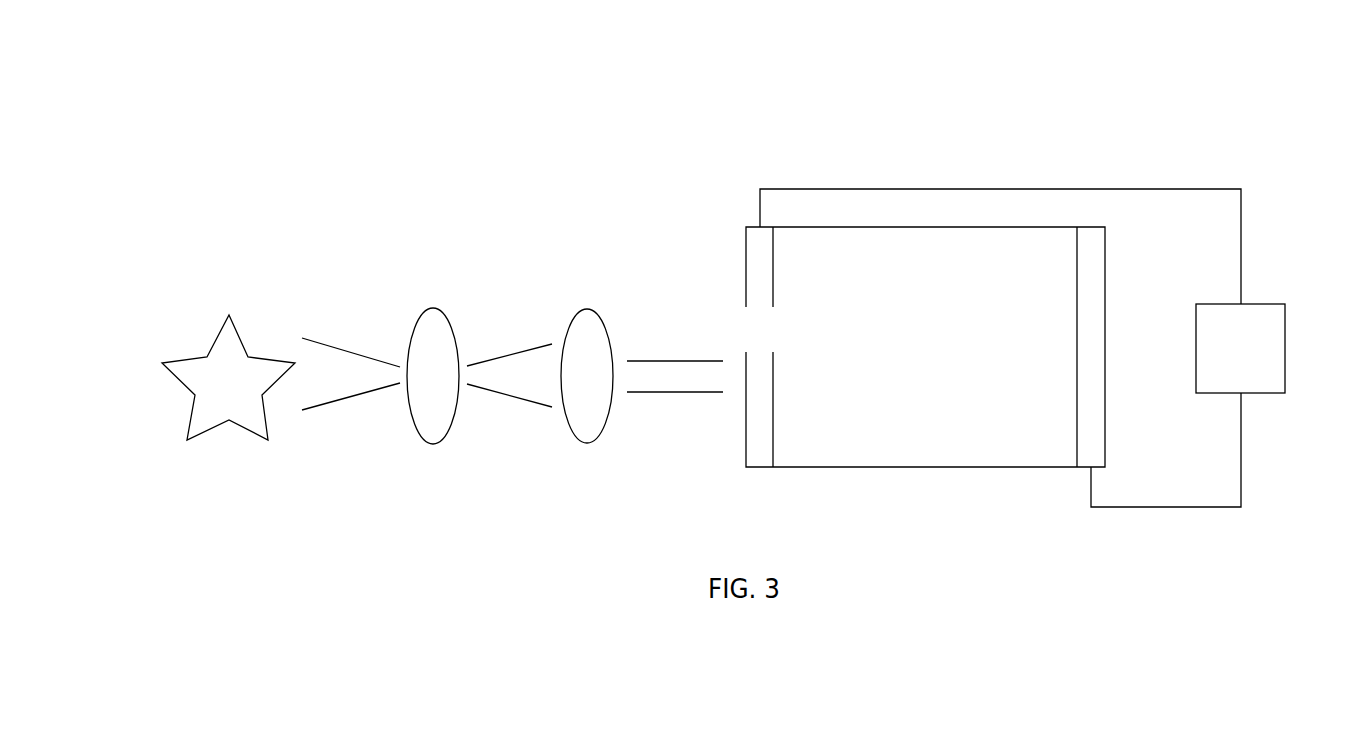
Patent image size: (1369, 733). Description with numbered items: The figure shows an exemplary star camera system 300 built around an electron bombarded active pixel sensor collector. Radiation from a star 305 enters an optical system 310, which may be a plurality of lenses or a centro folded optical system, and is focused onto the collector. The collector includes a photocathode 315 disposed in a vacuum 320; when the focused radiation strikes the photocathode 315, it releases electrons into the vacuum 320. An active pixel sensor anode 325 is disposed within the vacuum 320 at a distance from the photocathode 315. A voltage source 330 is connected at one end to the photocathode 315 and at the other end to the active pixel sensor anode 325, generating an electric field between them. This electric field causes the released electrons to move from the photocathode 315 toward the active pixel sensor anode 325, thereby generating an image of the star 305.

The star camera system 300 is at (376, 106).
The star 305 is at (207, 430).
The optical system 310 is at (722, 283).
The photocathode 315 is at (762, 457).
The vacuum 320 is at (920, 242).
The active pixel sensor anode 325 is at (1088, 458).
The voltage source 330 is at (1267, 302).